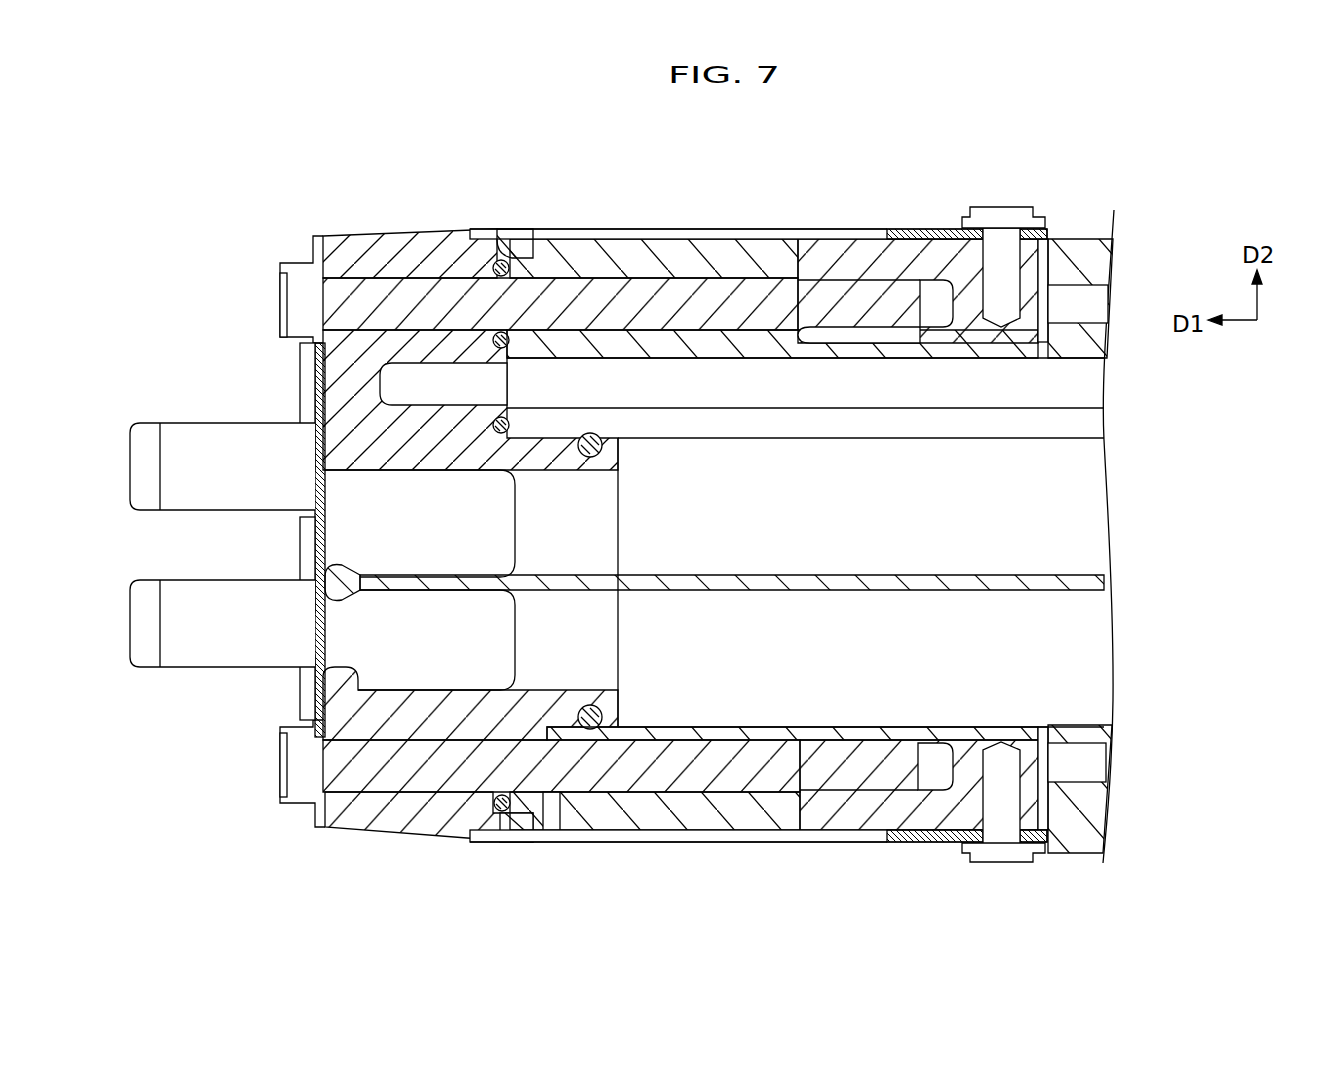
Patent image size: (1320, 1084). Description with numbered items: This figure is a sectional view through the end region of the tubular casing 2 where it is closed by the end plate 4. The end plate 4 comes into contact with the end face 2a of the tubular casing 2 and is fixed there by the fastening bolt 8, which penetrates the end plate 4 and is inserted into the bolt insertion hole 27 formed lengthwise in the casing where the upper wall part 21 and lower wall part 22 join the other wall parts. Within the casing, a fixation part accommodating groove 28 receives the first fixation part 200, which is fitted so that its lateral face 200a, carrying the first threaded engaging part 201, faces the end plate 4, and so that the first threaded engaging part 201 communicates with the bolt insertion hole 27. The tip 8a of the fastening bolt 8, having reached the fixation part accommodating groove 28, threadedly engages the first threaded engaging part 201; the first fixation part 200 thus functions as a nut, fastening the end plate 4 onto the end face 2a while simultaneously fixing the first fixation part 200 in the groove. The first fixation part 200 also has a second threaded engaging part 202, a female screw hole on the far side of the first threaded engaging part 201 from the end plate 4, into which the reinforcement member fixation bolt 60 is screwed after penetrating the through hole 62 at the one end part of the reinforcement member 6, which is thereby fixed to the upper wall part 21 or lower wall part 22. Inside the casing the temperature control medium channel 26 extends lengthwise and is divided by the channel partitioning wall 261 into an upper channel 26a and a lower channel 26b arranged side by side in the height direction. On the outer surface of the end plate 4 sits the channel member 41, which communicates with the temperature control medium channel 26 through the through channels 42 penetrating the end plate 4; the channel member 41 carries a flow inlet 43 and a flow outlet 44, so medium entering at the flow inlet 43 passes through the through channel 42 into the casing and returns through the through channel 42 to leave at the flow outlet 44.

The tubular casing 2 is at (941, 130).
The end face 2a is at (498, 258).
The end plate 4 is at (412, 232).
The reinforcement member 6 is at (820, 222).
The fastening bolt 8 is at (284, 270).
The tip 8a is at (855, 285).
The upper wall part 21 is at (680, 238).
The lower wall part 22 is at (678, 832).
The temperature control medium channel 26 is at (1198, 497).
The upper channel 26a is at (1087, 552).
The lower channel 26b is at (1087, 627).
The bolt insertion hole 27 is at (628, 290).
The fixation part accommodating groove 28 is at (1078, 245).
The channel member 41 is at (310, 675).
The through channel 42 is at (358, 483).
The flow inlet 43 is at (187, 420).
The flow outlet 44 is at (188, 668).
The reinforcement member fixation bolt 60 is at (1003, 207).
The through hole 62 is at (1030, 238).
The first fixation part 200 is at (873, 234).
The lateral face 200a is at (773, 240).
The first threaded engaging part 201 is at (905, 290).
The second threaded engaging part 202 is at (1042, 245).
The channel partitioning wall 261 is at (1010, 575).